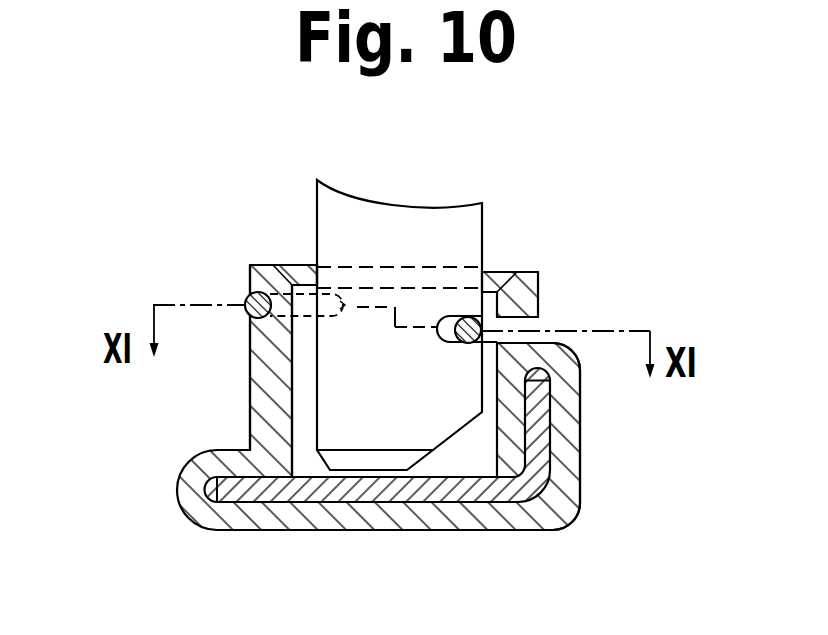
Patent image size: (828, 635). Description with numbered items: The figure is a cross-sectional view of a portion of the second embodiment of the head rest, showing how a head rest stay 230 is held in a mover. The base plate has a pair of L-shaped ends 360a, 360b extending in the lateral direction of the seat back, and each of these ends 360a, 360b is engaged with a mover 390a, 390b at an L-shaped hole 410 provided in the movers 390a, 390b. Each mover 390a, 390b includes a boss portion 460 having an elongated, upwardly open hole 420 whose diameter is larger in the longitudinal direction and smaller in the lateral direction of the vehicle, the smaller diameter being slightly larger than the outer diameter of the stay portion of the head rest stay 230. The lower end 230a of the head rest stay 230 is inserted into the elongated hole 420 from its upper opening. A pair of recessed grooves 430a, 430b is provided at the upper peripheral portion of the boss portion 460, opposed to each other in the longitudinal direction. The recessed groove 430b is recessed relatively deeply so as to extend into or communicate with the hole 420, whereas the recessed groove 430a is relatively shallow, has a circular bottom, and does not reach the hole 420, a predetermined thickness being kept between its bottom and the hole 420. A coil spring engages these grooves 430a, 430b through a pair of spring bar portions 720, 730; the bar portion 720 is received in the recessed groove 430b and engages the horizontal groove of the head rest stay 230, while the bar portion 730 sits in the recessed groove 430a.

The head rest stay 230 is at (470, 227).
The lower end of the head rest stay 230a is at (337, 432).
The L-shaped end of the base plate 360a is at (512, 435).
The L-shaped end of the base plate 360b is at (537, 458).
The mover 390a is at (620, 436).
The mover 390b is at (580, 421).
The L-shaped hole 410 is at (476, 504).
The elongated hole 420 is at (291, 374).
The recessed groove 430a is at (290, 287).
The recessed groove 430b is at (527, 323).
The boss portion 460 is at (247, 417).
The spring bar portion 720 is at (500, 307).
The spring bar portion 730 is at (246, 297).